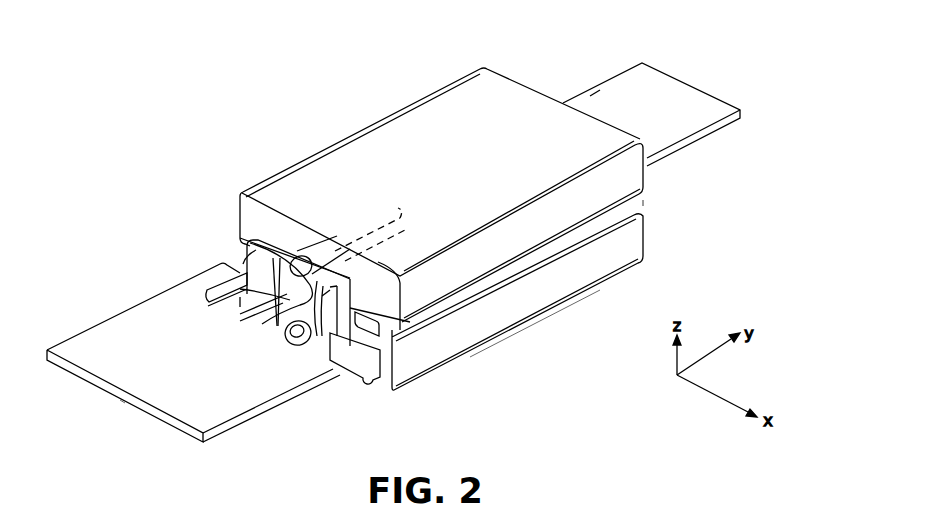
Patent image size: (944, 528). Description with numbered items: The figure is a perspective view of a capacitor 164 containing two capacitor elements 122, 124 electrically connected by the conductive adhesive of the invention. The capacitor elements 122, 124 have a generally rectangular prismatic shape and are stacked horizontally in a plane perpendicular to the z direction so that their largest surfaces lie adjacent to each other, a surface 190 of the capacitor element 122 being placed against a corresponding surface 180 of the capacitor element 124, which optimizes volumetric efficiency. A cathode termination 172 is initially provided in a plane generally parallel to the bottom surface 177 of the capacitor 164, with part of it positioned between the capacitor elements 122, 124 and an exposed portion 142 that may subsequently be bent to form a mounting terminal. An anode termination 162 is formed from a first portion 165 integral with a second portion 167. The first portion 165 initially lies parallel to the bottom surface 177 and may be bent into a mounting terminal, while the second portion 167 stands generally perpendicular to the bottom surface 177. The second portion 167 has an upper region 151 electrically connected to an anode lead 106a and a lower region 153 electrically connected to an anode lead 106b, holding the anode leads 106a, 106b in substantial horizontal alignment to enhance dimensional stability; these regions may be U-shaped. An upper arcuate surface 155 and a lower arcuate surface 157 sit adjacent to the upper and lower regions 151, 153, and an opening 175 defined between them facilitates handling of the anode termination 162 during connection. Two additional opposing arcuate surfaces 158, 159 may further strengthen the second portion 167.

The capacitor 164 is at (131, 119).
The capacitor element 122 is at (441, 171).
The cathode termination 172 is at (656, 102).
The exposed portion 142 is at (690, 100).
The anode lead 106a is at (393, 208).
The upper region 151 is at (290, 256).
The second portion 167 is at (356, 282).
The upper arcuate surface 155 is at (250, 270).
The surface 190 is at (650, 208).
The capacitor element 124 is at (553, 302).
The anode termination 162 is at (227, 364).
The arcuate surface 158 is at (208, 305).
The lower arcuate surface 157 is at (252, 320).
The lower region 153 is at (283, 327).
The anode lead 106b is at (352, 309).
The bottom surface 177 is at (495, 344).
The opening 175 is at (314, 297).
The arcuate surface 159 is at (322, 307).
The surface 180 is at (390, 352).
The first portion 165 is at (232, 395).